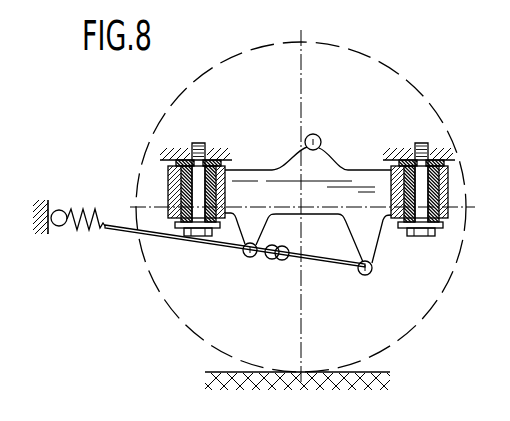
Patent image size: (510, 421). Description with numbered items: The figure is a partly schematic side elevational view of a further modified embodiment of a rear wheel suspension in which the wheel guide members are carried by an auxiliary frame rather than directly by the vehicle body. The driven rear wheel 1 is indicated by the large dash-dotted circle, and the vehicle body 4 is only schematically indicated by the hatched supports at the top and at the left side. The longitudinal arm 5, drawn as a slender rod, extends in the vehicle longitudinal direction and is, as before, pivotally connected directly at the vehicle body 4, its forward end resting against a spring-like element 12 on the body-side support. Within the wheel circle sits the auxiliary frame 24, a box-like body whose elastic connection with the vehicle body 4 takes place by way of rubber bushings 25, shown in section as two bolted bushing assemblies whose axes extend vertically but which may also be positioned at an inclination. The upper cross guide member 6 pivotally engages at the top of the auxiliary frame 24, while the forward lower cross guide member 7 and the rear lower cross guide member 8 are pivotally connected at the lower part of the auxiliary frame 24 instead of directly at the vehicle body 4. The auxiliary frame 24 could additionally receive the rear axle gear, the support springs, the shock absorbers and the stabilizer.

The rear wheel 1 is at (398, 72).
The vehicle body 4 is at (42, 208).
The longitudinal arm 5 is at (181, 241).
The upper cross guide member 6 is at (313, 134).
The forward lower cross guide member 7 is at (251, 257).
The rear lower cross guide member 8 is at (371, 272).
The spring 12 is at (65, 232).
The auxiliary frame 24 is at (343, 175).
The rubber bushing 25 is at (175, 192).